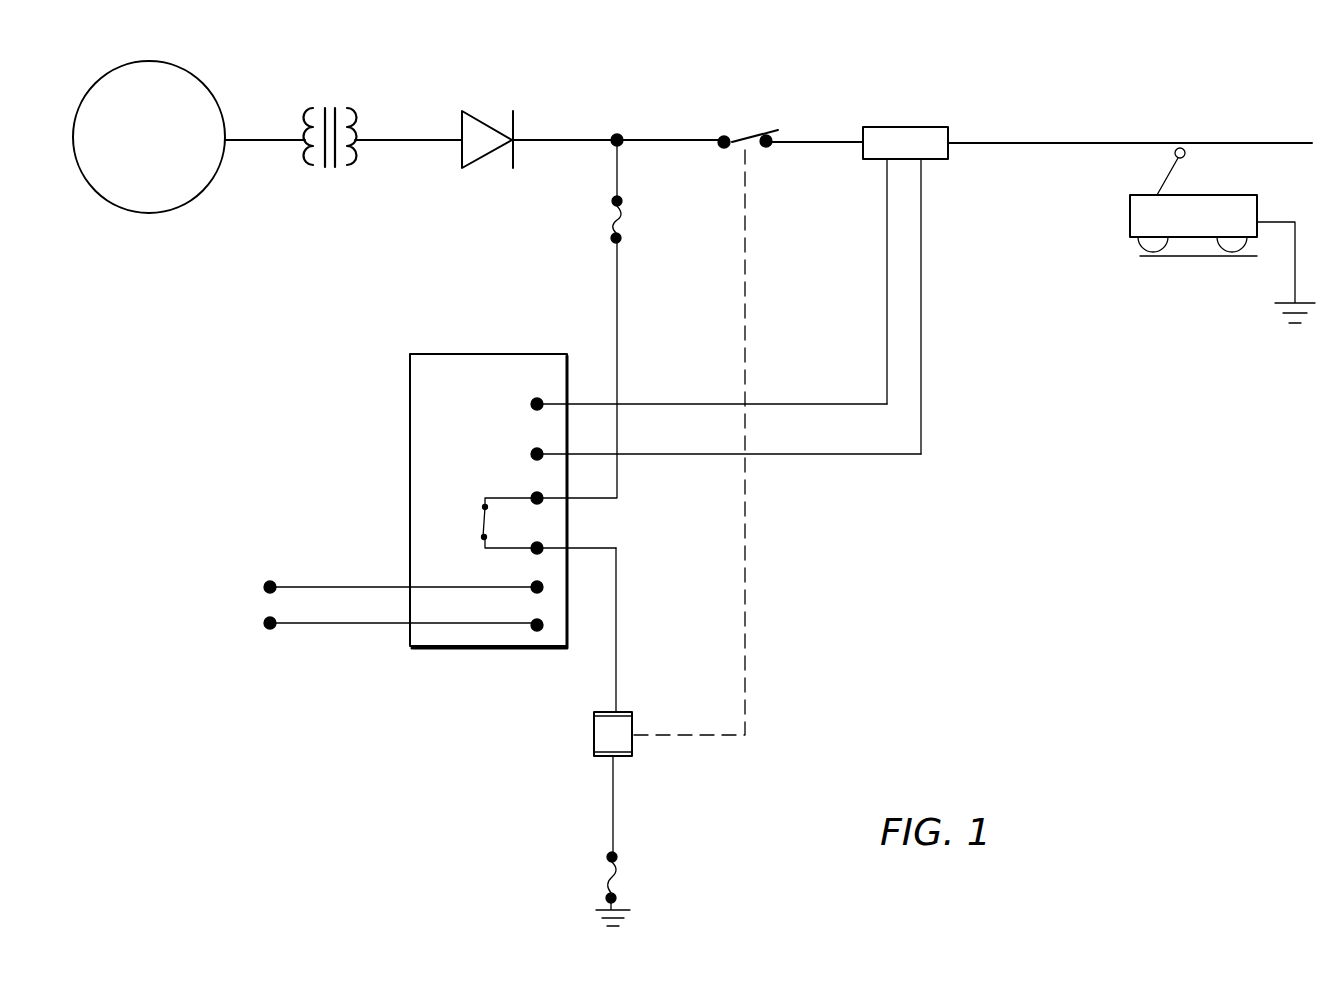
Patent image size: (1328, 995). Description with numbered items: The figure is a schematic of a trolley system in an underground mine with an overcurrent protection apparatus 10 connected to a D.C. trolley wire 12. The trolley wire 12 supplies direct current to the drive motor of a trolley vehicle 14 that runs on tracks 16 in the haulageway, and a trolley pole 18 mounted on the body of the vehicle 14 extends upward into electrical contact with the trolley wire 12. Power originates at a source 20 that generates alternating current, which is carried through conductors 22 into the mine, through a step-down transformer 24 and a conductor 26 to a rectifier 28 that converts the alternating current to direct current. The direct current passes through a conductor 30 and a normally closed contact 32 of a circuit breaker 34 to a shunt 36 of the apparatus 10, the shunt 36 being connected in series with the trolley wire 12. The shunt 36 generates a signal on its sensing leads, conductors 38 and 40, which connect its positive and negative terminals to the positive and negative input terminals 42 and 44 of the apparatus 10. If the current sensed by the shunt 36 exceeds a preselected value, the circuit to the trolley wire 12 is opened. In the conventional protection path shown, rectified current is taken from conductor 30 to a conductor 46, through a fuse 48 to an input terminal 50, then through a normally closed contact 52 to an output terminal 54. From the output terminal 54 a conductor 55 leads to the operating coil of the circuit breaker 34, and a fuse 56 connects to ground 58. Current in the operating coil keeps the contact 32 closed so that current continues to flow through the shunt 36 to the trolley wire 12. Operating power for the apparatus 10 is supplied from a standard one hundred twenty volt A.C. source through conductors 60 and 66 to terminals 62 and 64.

The overcurrent protection apparatus 10 is at (375, 497).
The trolley wire 12 is at (1022, 142).
The trolley vehicle 14 is at (1130, 218).
The tracks 16 is at (1180, 258).
The trolley pole 18 is at (1158, 185).
The source 20 is at (185, 72).
The conductors 22 is at (265, 140).
The step-down transformer 24 is at (330, 172).
The conductor 26 is at (420, 138).
The rectifier 28 is at (460, 153).
The conductor 30 is at (565, 138).
The normally closed contact 32 is at (746, 140).
The circuit breaker 34 is at (633, 723).
The shunt 36 is at (880, 127).
The conductor 38 is at (887, 302).
The conductor 40 is at (921, 312).
The input terminal 42 is at (530, 400).
The input terminal 44 is at (532, 448).
The conductor 46 is at (619, 160).
The fuse 48 is at (628, 208).
The input terminal 50 is at (535, 493).
The normally closed contact 52 is at (482, 513).
The output terminal 54 is at (530, 553).
The conductor 55 is at (617, 600).
The fuse 56 is at (605, 868).
The ground 58 is at (625, 910).
The conductor 60 is at (362, 586).
The terminal 62 is at (532, 592).
The terminal 64 is at (534, 633).
The conductor 66 is at (356, 626).